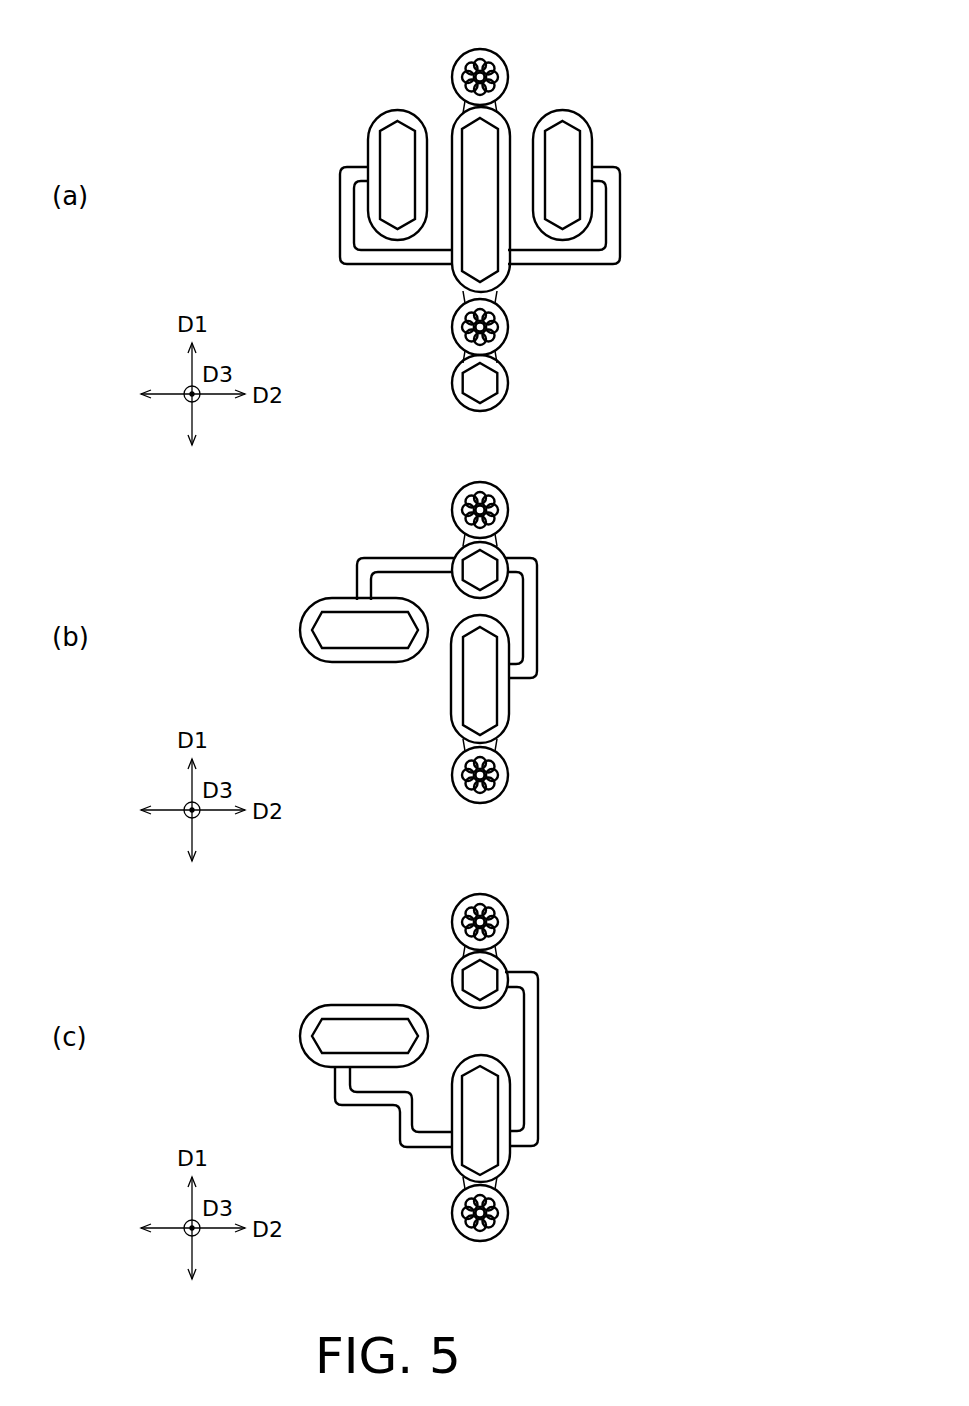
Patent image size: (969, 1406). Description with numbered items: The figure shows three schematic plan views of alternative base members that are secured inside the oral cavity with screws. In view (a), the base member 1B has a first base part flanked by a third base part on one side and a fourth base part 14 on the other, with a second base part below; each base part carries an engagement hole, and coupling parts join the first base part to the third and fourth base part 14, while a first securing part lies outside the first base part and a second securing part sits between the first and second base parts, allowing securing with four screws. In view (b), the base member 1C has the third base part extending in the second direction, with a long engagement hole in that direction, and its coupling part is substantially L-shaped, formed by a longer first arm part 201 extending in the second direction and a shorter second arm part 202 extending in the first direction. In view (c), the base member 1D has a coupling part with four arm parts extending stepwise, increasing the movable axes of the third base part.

The base member 1B is at (562, 52).
The base member 1C is at (562, 497).
The base member 1D is at (562, 914).
The fourth base part 14 is at (570, 118).
The first arm part 201 is at (400, 556).
The second arm part 202 is at (362, 590).